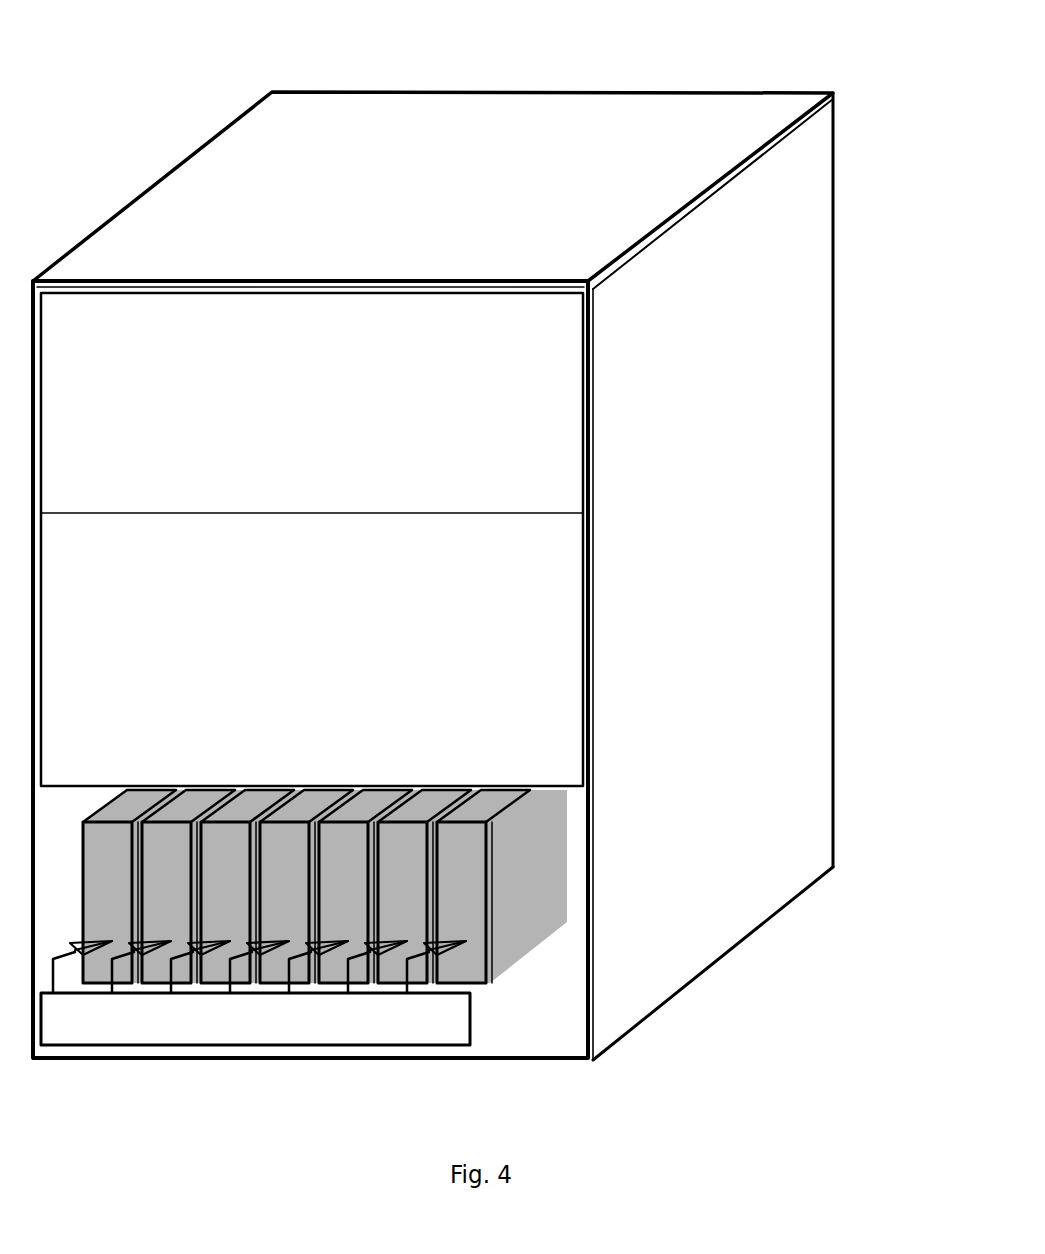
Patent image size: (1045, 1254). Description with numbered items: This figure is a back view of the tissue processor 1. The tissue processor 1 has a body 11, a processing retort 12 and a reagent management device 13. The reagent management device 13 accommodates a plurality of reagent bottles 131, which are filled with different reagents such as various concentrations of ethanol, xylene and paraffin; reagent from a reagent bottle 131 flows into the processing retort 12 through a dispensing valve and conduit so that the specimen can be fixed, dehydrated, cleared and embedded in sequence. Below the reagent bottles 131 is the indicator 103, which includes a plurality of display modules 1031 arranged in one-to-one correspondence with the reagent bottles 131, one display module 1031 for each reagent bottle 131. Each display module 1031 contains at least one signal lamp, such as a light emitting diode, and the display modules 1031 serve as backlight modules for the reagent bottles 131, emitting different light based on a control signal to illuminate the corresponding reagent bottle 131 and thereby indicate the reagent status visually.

The tissue processor 1 is at (490, 535).
The body 11 is at (788, 323).
The processing retort 12 is at (388, 403).
The reagent management device 13 is at (494, 693).
The reagent bottle 131 is at (535, 850).
The display module 1031 is at (463, 937).
The indicator 103 is at (437, 1025).